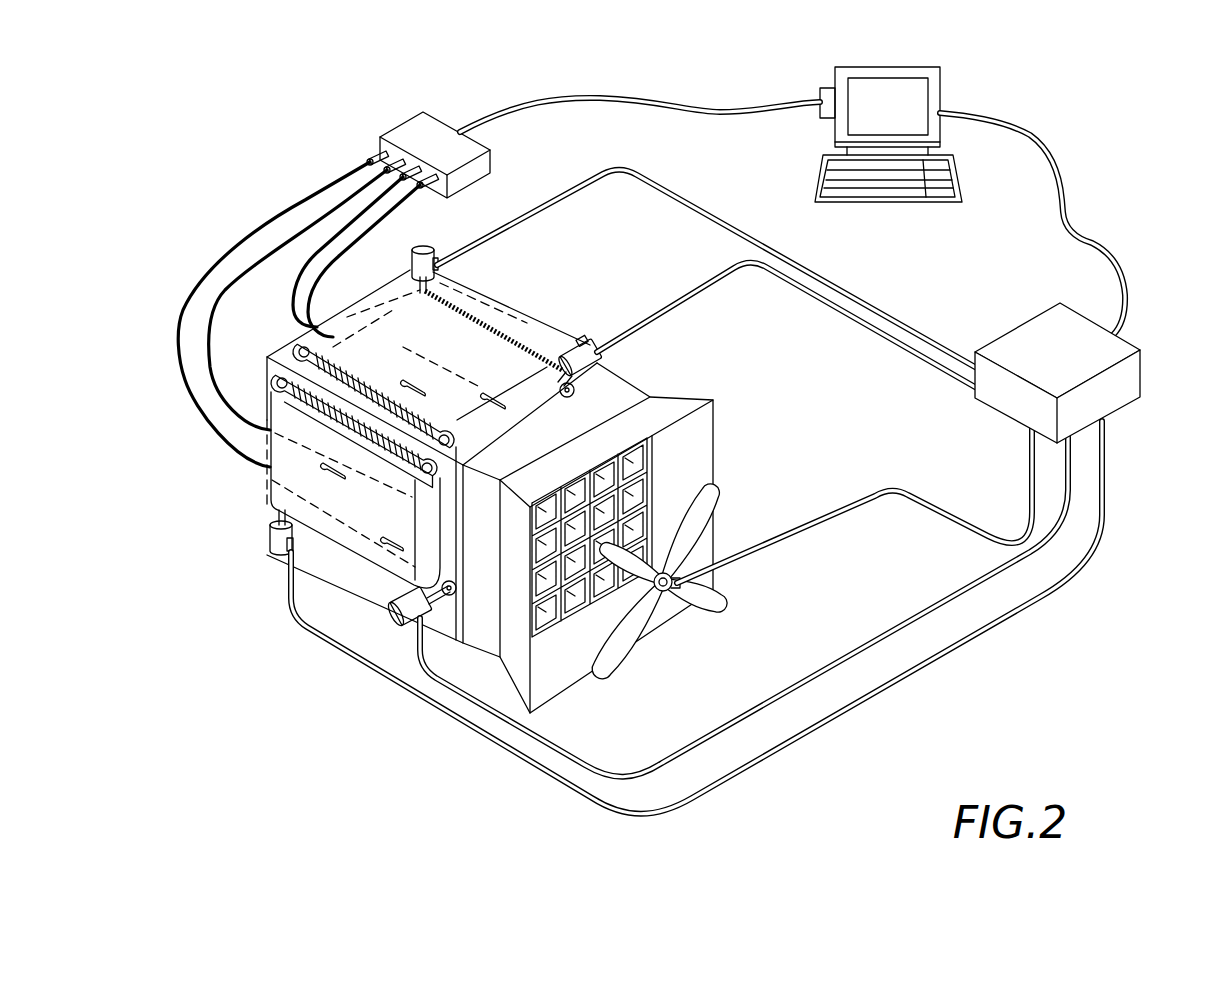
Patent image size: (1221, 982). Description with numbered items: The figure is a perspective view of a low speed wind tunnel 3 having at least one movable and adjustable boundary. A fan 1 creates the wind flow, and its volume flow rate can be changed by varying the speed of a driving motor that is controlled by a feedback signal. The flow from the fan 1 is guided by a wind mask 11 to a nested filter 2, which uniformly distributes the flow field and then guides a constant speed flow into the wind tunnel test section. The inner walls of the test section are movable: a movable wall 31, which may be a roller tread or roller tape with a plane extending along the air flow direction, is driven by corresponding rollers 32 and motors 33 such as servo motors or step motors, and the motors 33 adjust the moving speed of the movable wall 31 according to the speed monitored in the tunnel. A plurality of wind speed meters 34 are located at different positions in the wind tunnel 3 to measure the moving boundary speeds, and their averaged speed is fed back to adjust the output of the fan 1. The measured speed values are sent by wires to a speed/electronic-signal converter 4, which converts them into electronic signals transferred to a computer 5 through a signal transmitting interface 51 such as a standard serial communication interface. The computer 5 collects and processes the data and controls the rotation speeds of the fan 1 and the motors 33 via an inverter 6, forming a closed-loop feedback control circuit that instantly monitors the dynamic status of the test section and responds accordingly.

The fan 1 is at (634, 627).
The nested filter 2 is at (480, 636).
The wind mask 11 is at (522, 658).
The wind tunnel 3 is at (338, 494).
The movable wall 31 is at (363, 540).
The rollers 32 is at (278, 378).
The motors 33 is at (277, 553).
The wind speed meters 34 is at (489, 395).
The speed/electronic-signal converter 4 is at (412, 130).
The computer 5 is at (792, 181).
The signal transmitting interface 51 is at (828, 87).
The inverter 6 is at (1130, 390).